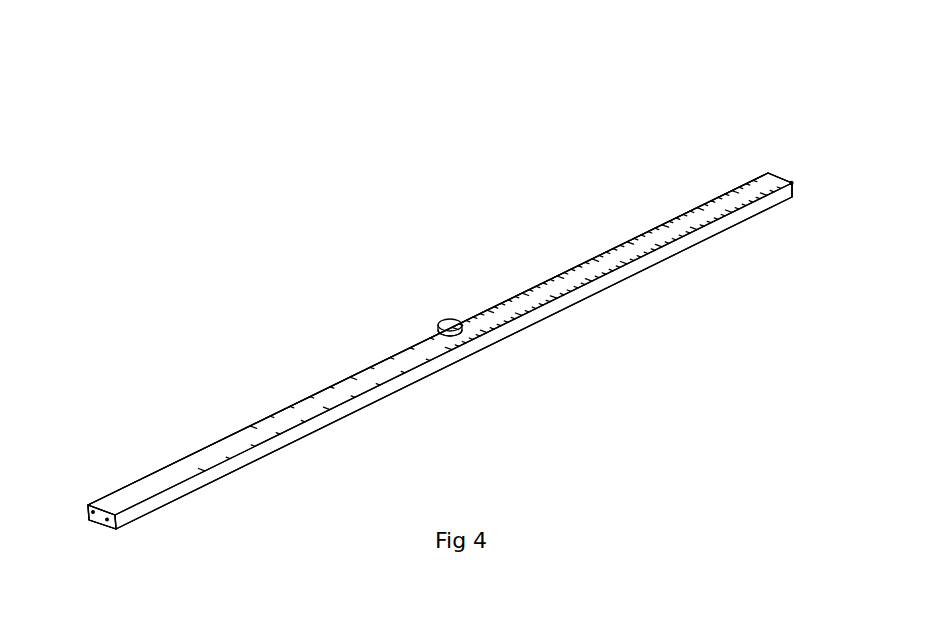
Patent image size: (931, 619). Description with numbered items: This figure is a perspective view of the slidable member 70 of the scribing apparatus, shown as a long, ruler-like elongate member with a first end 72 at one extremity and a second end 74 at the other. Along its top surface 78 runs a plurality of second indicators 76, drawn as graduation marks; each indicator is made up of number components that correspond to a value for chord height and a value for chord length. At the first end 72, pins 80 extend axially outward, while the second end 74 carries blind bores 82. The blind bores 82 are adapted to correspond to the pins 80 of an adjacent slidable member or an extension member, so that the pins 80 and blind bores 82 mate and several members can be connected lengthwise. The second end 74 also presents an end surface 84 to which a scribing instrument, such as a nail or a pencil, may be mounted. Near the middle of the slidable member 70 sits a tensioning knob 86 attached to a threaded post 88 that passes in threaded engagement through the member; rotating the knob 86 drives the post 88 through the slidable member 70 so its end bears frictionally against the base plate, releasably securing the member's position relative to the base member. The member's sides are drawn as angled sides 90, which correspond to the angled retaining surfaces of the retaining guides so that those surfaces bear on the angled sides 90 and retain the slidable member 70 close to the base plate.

The slidable member 70 is at (625, 122).
The first end 72 is at (794, 203).
The second end 74 is at (118, 533).
The second indicators 76 is at (587, 262).
The top surface 78 is at (153, 484).
The pins 80 is at (778, 178).
The blind bores 82 is at (51, 570).
The end surface 84 is at (91, 509).
The tensioning knob 86 is at (447, 321).
The threaded post 88 is at (455, 338).
The angled sides 90 is at (200, 482).